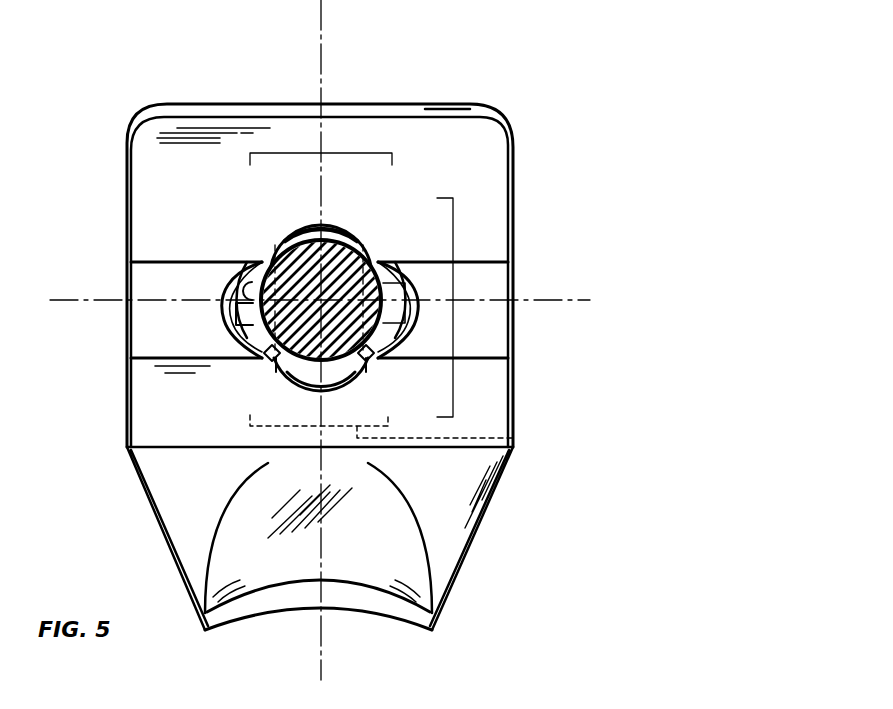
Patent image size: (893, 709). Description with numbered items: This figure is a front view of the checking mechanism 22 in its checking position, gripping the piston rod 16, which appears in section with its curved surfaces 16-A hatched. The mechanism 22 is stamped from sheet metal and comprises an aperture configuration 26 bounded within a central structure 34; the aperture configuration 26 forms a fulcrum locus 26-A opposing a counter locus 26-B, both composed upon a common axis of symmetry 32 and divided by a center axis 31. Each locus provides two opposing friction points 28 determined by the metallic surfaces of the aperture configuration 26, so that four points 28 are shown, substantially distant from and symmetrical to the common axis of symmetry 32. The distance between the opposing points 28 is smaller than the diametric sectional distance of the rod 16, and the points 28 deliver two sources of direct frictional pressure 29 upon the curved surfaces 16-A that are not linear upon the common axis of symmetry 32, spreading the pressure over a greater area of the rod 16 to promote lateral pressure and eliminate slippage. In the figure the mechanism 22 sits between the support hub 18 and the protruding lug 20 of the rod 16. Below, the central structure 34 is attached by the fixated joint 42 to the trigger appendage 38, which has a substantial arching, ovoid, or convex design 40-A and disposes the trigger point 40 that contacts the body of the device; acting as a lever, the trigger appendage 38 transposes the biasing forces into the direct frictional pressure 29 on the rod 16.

The checking mechanism 22 is at (110, 85).
The common axis of symmetry 32 is at (323, 72).
The central structure 34 is at (148, 233).
The counter locus 26-B is at (353, 153).
The curved surfaces 16-A is at (307, 235).
The piston rod 16 is at (332, 248).
The friction points 28 is at (262, 258).
The protruding lug 20 is at (250, 292).
The support hub 18 is at (236, 311).
The direct frictional pressure 29 is at (268, 322).
The aperture configuration 26 is at (455, 285).
The center axis 31 is at (572, 300).
The fixated joint 42 is at (205, 437).
The fulcrum locus 26-A is at (514, 440).
The trigger point 40 is at (330, 550).
The trigger appendage 38 is at (480, 565).
The convex design 40-A is at (300, 580).